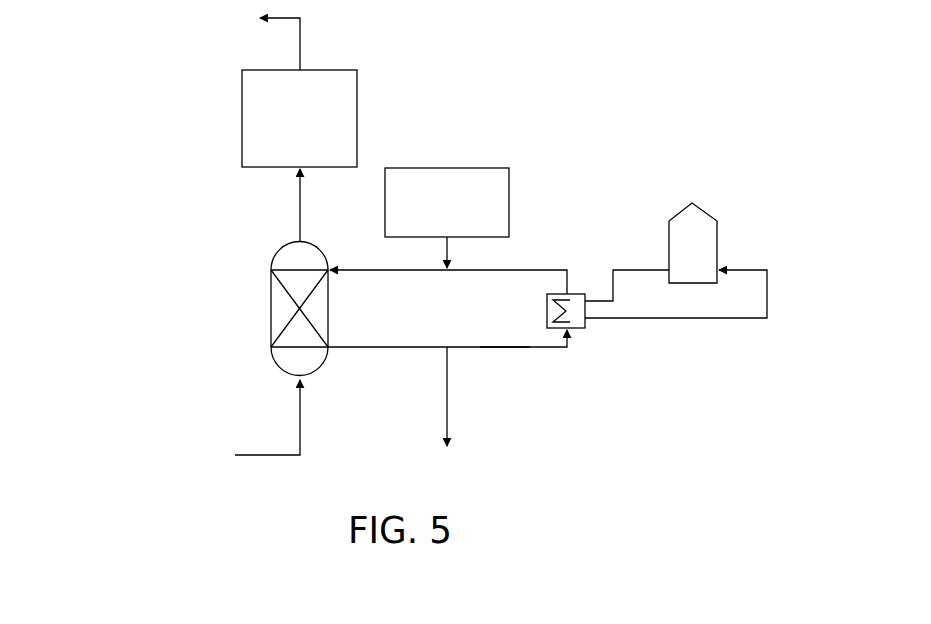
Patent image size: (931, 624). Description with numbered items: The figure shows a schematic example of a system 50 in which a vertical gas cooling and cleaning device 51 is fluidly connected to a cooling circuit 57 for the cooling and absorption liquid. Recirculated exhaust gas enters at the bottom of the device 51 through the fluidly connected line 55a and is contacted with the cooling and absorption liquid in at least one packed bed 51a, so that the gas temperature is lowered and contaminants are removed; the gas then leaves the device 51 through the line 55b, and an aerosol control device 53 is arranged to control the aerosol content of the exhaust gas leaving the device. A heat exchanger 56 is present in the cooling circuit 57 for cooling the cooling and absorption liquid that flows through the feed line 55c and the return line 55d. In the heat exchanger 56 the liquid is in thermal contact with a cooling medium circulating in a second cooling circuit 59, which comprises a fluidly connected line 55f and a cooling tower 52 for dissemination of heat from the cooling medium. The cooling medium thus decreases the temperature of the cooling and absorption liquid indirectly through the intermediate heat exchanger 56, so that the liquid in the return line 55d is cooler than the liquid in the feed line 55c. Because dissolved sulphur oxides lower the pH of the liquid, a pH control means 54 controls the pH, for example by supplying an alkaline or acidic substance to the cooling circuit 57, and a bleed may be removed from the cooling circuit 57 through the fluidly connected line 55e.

The system 50 is at (128, 128).
The gas cooling and cleaning device 51 is at (271, 258).
The packed bed 51a is at (280, 314).
The cooling tower 52 is at (687, 225).
The aerosol control device 53 is at (242, 128).
The pH control means 54 is at (447, 168).
The line 55a is at (300, 418).
The line 55b is at (300, 203).
The feed line 55c is at (388, 348).
The return line 55d is at (360, 270).
The line 55e is at (447, 415).
The line 55f is at (643, 318).
The heat exchanger 56 is at (547, 308).
The cooling circuit 57 is at (507, 348).
The second cooling circuit 59 is at (630, 270).